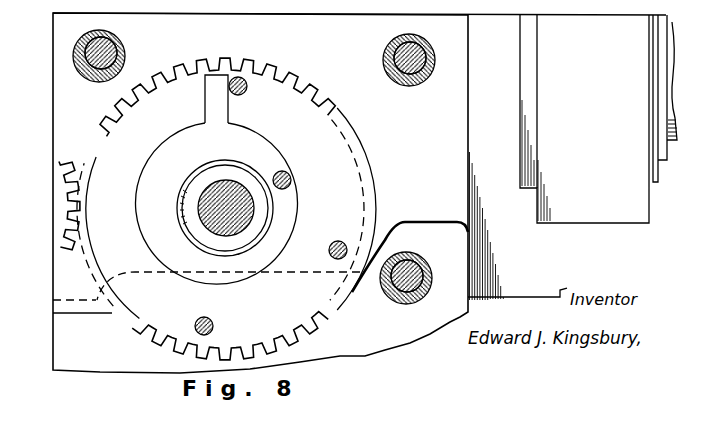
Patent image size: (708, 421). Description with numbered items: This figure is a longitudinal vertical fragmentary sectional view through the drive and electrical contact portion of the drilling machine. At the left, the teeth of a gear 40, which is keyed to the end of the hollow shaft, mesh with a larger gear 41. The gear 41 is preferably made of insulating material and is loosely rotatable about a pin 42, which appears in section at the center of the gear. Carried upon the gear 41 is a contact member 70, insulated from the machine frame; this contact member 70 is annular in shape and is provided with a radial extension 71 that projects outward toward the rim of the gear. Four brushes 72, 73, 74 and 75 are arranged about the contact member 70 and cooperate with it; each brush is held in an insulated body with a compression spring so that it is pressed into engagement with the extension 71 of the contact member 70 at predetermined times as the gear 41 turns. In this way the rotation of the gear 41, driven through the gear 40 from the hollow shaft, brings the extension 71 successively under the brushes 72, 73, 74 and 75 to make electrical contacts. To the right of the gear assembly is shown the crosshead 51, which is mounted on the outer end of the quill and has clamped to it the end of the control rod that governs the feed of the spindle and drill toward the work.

The gear 40 is at (62, 212).
The gear 41 is at (292, 95).
The pin 42 is at (242, 190).
The crosshead 51 is at (599, 218).
The contact member 70 is at (302, 205).
The radial extension 71 is at (218, 100).
The brush 72 is at (292, 179).
The brush 73 is at (245, 82).
The brush 74 is at (346, 245).
The brush 75 is at (214, 325).